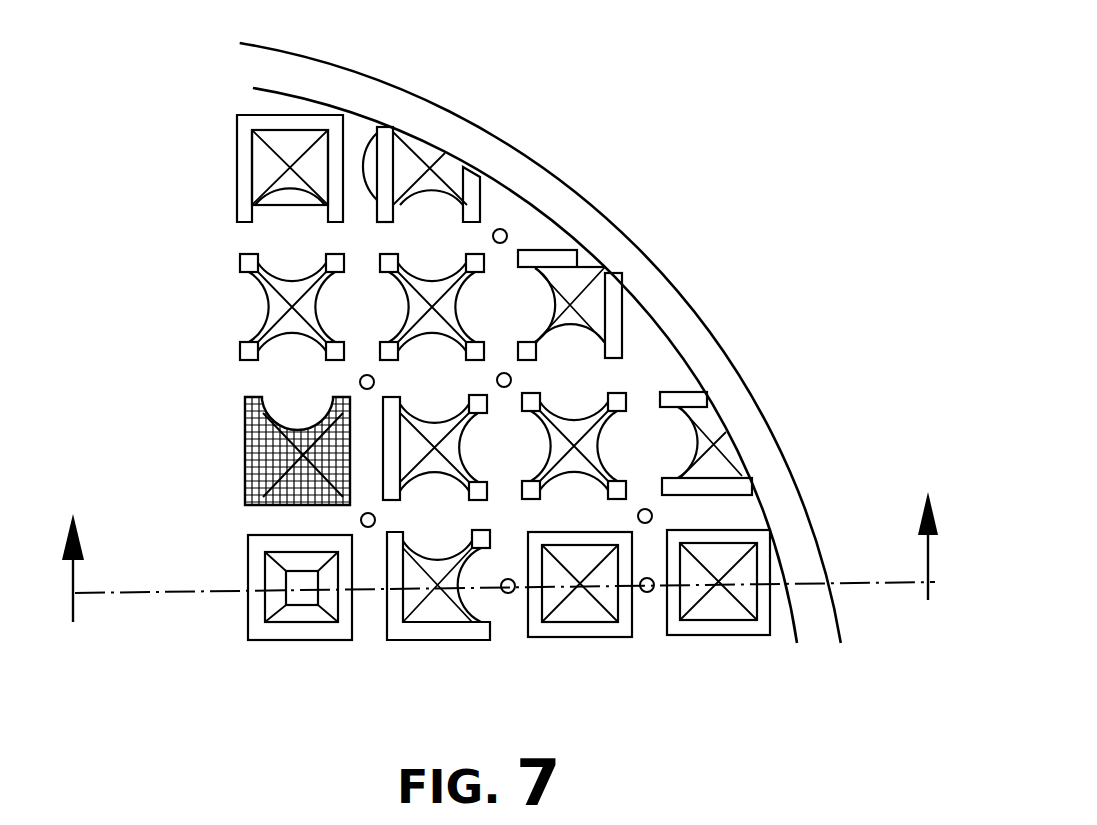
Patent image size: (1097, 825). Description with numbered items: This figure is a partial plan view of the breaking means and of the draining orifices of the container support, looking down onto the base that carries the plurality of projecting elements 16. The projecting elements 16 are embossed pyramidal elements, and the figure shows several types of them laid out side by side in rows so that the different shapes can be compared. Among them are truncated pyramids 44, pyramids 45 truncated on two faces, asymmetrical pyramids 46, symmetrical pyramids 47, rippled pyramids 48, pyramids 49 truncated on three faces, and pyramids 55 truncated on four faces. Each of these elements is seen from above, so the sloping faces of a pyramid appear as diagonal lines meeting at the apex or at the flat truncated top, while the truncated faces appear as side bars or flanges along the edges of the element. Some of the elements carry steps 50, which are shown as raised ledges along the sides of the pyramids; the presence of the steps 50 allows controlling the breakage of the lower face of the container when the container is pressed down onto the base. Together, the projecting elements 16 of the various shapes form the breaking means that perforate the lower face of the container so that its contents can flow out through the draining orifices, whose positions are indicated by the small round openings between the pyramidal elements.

The projecting elements 16 is at (206, 283).
The truncated pyramids 44 is at (290, 618).
The pyramids truncated on two faces 45 is at (438, 608).
The asymmetrical pyramids 46 is at (582, 600).
The symmetrical pyramids 47 is at (718, 600).
The rippled pyramids 48 is at (244, 454).
The pyramids truncated on three faces 49 is at (436, 486).
The steps 50 is at (370, 150).
The pyramids truncated on four faces 55 is at (574, 479).